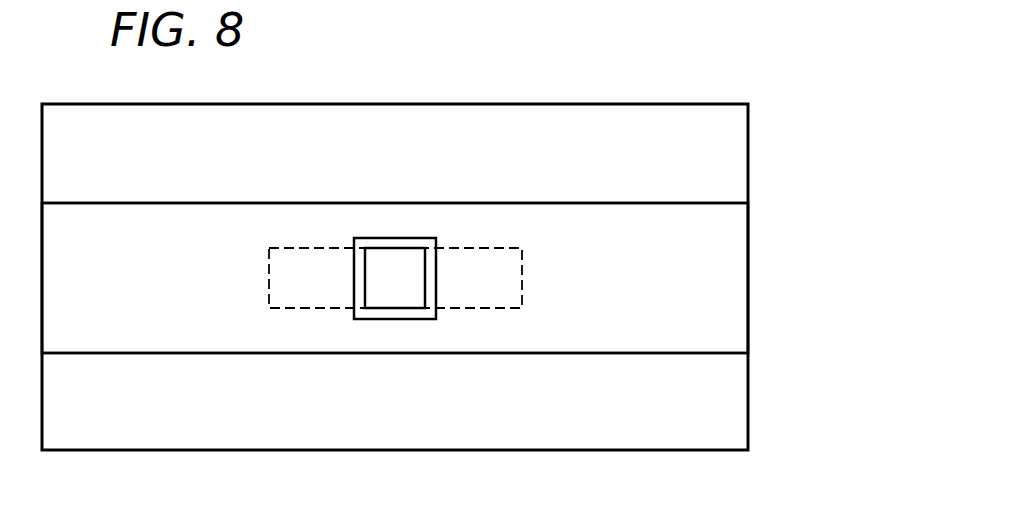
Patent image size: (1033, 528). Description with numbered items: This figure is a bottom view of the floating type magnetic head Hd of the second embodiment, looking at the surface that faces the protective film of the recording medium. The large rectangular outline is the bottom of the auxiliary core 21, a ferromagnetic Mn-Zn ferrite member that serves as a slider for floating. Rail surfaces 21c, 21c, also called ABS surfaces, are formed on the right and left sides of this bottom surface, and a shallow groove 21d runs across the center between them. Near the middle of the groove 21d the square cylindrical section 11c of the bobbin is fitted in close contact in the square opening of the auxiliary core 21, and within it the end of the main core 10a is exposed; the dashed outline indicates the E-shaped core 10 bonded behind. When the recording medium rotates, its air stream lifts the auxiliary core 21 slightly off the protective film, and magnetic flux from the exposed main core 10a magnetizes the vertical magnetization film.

The recording head Hd is at (605, 98).
The auxiliary core 21 is at (282, 450).
The rail surfaces 21c is at (728, 160).
The shallow groove 21d is at (732, 281).
The square cylindrical section 11c is at (385, 314).
The main core 10a is at (393, 262).
The E-shaped core 10 is at (477, 308).